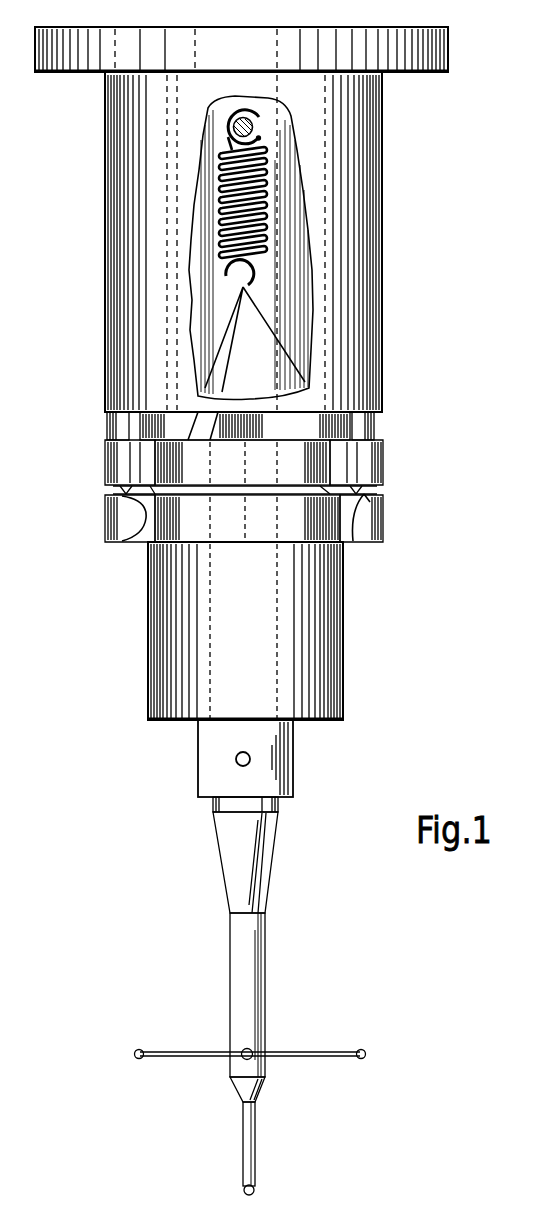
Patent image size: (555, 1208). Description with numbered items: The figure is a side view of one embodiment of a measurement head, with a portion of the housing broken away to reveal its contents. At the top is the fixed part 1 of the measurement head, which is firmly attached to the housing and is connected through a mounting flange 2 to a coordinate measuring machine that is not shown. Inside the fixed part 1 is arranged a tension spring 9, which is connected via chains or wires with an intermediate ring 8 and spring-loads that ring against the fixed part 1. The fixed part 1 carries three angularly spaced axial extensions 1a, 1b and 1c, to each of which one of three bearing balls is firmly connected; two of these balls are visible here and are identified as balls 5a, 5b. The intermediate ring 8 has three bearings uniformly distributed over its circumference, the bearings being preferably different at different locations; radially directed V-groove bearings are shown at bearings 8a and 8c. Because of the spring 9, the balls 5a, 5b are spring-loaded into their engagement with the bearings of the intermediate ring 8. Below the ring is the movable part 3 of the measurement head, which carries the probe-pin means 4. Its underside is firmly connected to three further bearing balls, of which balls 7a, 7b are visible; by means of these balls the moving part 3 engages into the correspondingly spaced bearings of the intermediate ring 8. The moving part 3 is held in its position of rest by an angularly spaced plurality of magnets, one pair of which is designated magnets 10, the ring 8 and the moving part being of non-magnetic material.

The fixed part of the measurement head 1 is at (123, 240).
The axial extension 1a is at (122, 427).
The axial extension 1b is at (364, 427).
The axial extension 1c is at (266, 442).
The mounting flange 2 is at (62, 58).
The movable part of the measurement head 3 is at (330, 676).
The probe-pin means 4 is at (260, 958).
The bearing ball 5a is at (120, 496).
The bearing ball 5b is at (372, 500).
The bearing ball 7a is at (150, 490).
The bearing ball 7b is at (336, 485).
The intermediate ring 8 is at (386, 522).
The V-groove bearing 8a is at (130, 541).
The V-groove bearing 8c is at (353, 541).
The tension spring 9 is at (262, 207).
The pair of magnets 10 is at (197, 488).